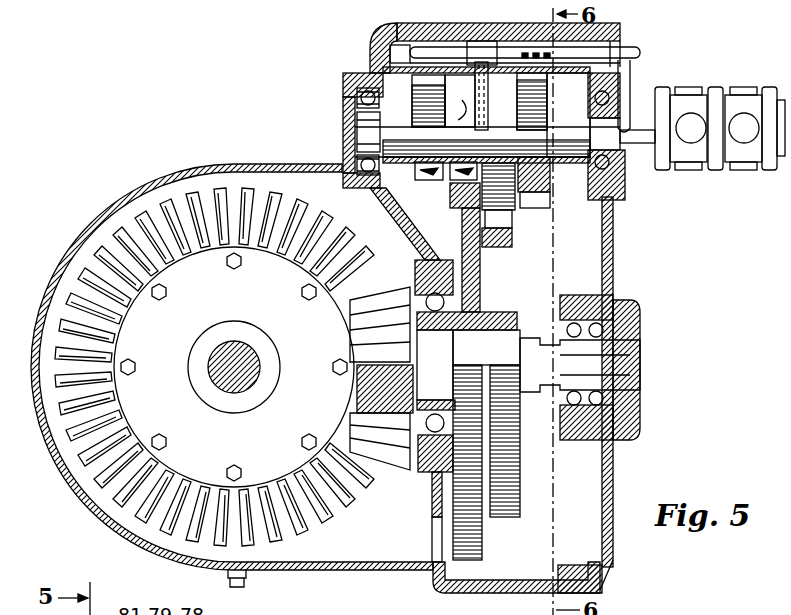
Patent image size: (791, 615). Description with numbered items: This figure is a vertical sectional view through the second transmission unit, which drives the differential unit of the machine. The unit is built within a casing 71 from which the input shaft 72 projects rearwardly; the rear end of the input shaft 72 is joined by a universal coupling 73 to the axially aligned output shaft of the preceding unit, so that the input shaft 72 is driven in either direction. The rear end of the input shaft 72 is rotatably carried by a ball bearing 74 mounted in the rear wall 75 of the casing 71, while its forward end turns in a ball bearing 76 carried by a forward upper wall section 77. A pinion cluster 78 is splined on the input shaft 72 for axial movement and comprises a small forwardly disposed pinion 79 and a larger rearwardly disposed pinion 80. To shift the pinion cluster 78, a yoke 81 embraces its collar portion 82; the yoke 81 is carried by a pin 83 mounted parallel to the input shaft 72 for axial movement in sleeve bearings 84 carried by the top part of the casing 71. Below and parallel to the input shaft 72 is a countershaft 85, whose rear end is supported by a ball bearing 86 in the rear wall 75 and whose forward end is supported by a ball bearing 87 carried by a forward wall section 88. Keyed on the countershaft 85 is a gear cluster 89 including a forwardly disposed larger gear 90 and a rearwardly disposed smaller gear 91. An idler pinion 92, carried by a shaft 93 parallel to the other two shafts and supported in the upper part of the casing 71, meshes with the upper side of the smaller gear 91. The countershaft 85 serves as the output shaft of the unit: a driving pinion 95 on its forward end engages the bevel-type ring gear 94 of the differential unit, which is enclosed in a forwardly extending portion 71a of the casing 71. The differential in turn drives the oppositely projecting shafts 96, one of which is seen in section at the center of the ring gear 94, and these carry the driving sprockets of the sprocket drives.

The casing 71 is at (372, 62).
The forwardly extending portion of the casing 71a is at (76, 493).
The input shaft 72 is at (632, 152).
The universal coupling 73 is at (700, 170).
The ball bearing 74 is at (605, 99).
The rear wall 75 is at (613, 250).
The ball bearing 76 is at (360, 98).
The forward upper wall section 77 is at (345, 128).
The pinion cluster 78 is at (458, 118).
The small forwardly disposed pinion 79 is at (418, 97).
The larger rearwardly disposed pinion 80 is at (515, 210).
The yoke 81 is at (486, 89).
The collar portion 82 is at (470, 99).
The pin 83 is at (626, 56).
The sleeve bearings 84 is at (425, 45).
The countershaft 85 is at (600, 363).
The ball bearing 86 is at (625, 322).
The ball bearing 87 is at (425, 435).
The forward wall section 88 is at (432, 486).
The gear cluster 89 is at (481, 285).
The larger gear 90 is at (482, 540).
The smaller gear 91 is at (520, 503).
The idler pinion 92 is at (476, 203).
The shaft 93 is at (572, 160).
The ring gear 94 is at (300, 527).
The driving pinion 95 is at (360, 335).
The oppositely projecting shafts 96 is at (250, 370).